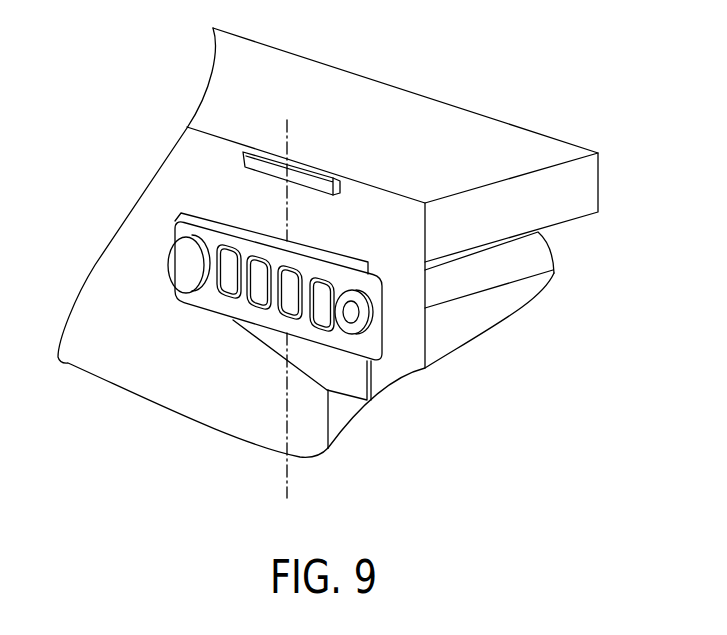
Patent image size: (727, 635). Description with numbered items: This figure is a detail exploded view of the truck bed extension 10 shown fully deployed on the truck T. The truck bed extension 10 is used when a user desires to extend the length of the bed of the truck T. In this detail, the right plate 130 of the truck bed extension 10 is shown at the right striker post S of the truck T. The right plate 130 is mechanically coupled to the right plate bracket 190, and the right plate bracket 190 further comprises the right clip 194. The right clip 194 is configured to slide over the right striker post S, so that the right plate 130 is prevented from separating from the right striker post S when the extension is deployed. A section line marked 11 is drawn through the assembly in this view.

The truck T is at (505, 116).
The right plate 130 is at (406, 364).
The section line 11 is at (287, 120).
The truck bed extension 10 is at (273, 269).
The right clip 194 is at (247, 245).
The right plate bracket 190 is at (275, 333).
The right striker post S is at (188, 268).